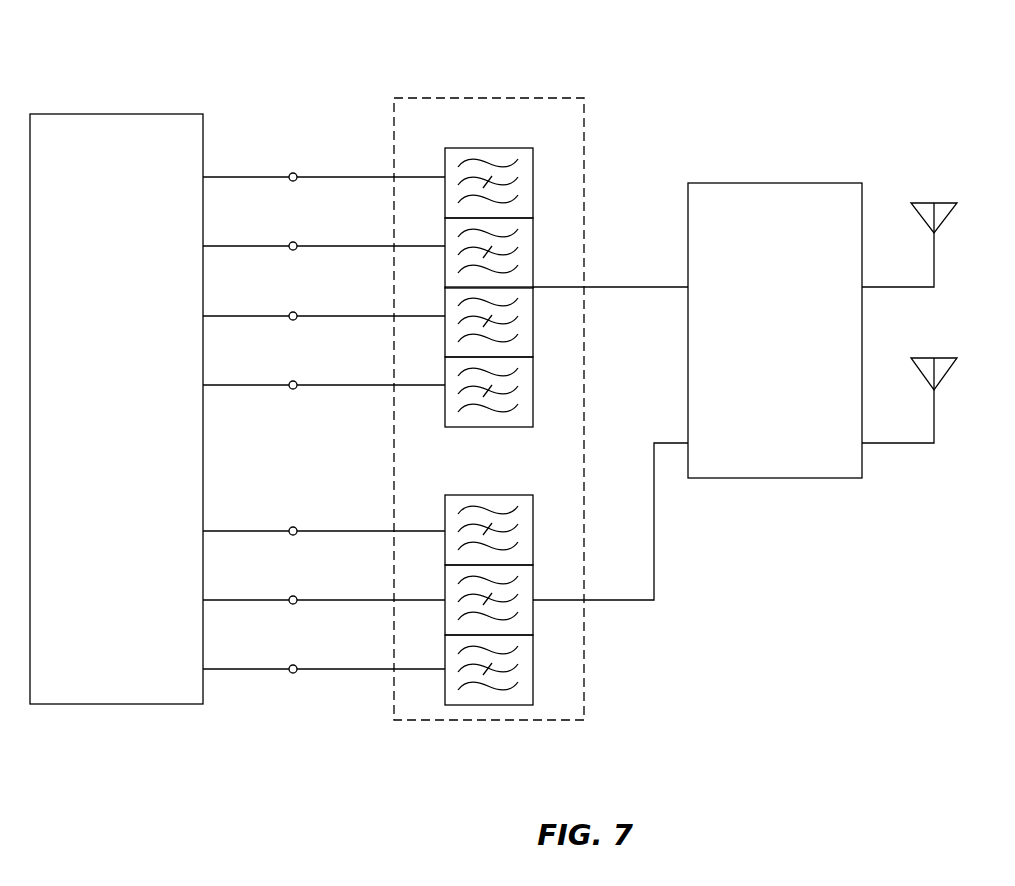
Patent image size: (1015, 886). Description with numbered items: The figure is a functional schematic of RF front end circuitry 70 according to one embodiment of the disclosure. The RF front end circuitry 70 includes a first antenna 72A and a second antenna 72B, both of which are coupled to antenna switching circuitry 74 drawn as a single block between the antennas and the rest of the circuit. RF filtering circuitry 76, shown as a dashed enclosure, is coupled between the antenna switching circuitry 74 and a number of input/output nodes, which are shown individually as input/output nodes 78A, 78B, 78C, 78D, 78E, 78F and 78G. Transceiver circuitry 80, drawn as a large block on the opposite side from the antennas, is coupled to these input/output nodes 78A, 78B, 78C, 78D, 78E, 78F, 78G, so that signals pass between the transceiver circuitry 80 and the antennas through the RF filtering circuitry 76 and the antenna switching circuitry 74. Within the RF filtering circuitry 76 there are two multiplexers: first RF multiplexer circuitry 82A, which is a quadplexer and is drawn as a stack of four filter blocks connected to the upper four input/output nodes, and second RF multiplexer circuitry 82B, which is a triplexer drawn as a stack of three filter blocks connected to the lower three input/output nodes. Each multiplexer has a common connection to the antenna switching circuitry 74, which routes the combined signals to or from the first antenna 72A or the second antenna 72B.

The RF front end circuitry 70 is at (773, 61).
The first antenna 72A is at (945, 205).
The second antenna 72B is at (945, 360).
The antenna switching circuitry 74 is at (775, 330).
The RF filtering circuitry 76 is at (430, 721).
The input/output node 78A is at (296, 173).
The input/output node 78B is at (296, 242).
The input/output node 78C is at (296, 312).
The input/output node 78D is at (296, 381).
The input/output node 78E is at (296, 527).
The input/output node 78F is at (296, 596).
The input/output node 78G is at (296, 665).
The transceiver circuitry 80 is at (116, 409).
The first RF multiplexer circuitry 82A is at (500, 148).
The second RF multiplexer circuitry 82B is at (500, 495).